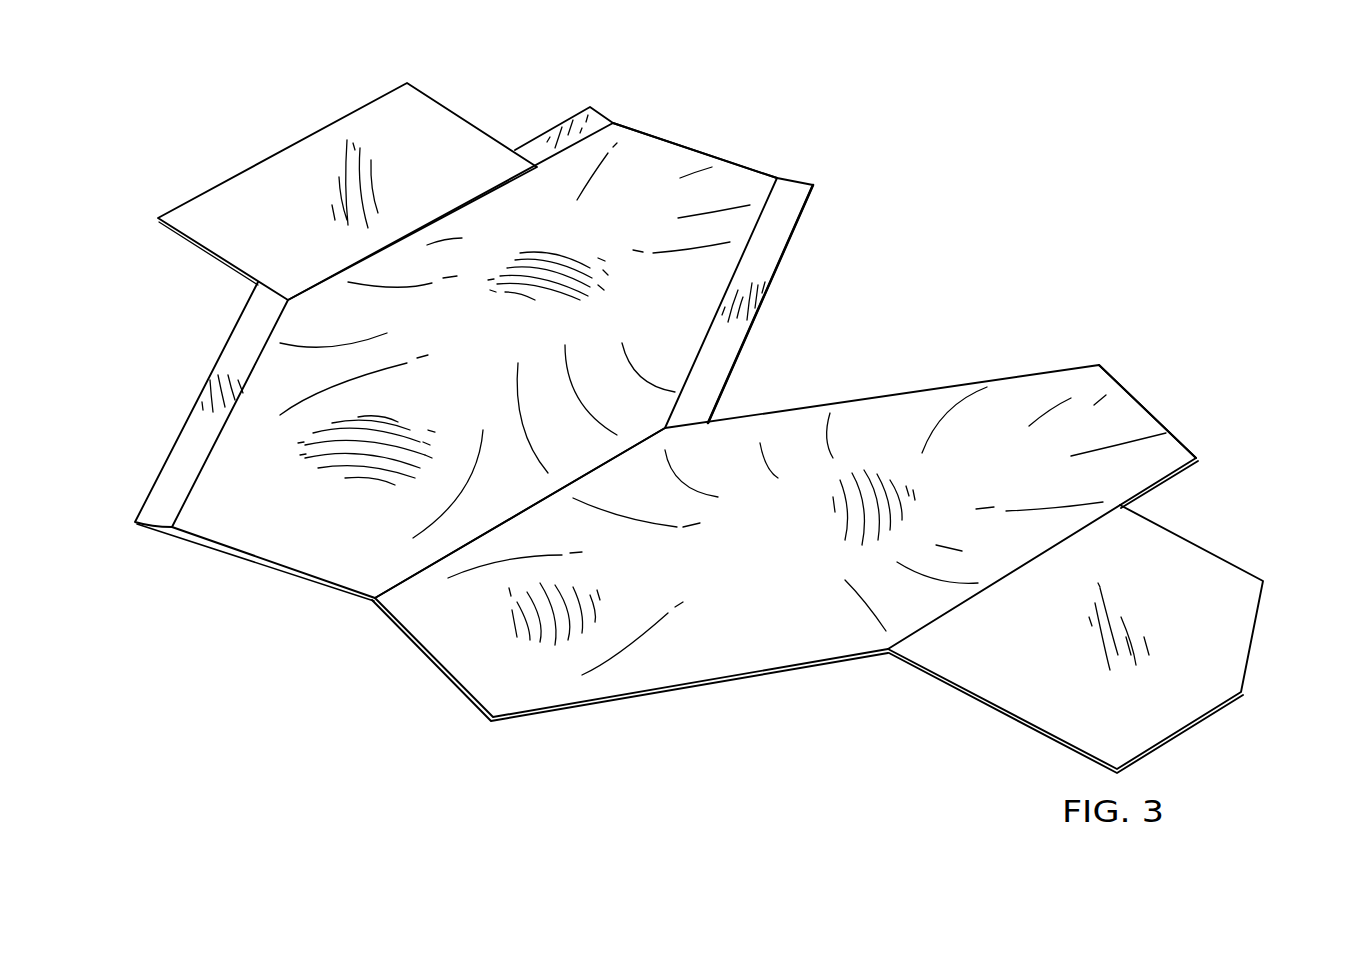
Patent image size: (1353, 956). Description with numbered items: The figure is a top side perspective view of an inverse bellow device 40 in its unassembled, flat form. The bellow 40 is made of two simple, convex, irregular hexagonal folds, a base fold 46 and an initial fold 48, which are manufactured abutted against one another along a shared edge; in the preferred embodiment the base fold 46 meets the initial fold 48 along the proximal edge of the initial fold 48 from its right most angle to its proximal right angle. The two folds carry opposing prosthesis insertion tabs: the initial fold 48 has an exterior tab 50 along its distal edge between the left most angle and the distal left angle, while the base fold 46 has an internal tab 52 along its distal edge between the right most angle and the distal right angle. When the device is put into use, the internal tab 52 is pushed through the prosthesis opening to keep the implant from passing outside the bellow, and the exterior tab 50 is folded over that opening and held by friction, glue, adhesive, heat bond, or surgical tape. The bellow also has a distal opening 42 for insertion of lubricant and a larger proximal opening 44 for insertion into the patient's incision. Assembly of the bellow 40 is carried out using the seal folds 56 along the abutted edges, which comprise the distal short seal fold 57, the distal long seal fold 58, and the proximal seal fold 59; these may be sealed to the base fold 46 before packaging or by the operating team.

The inverse bellow device 40 is at (1040, 166).
The distal opening 42 is at (711, 136).
The proximal opening 44 is at (263, 575).
The base fold 46 is at (802, 549).
The initial fold 48 is at (497, 372).
The exterior tab 50 is at (283, 158).
The internal tab 52 is at (1243, 637).
The seal folds 56 is at (226, 350).
The distal short seal fold 57 is at (587, 121).
The distal long seal fold 58 is at (795, 188).
The proximal seal fold 59 is at (192, 423).